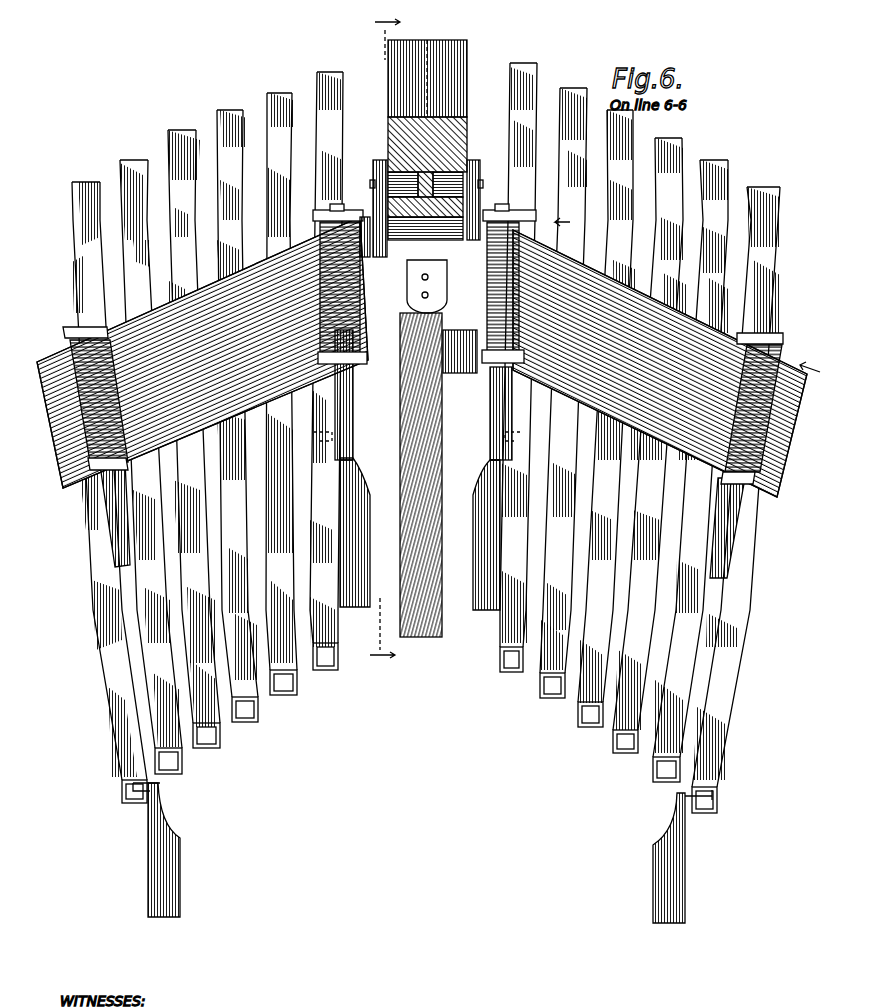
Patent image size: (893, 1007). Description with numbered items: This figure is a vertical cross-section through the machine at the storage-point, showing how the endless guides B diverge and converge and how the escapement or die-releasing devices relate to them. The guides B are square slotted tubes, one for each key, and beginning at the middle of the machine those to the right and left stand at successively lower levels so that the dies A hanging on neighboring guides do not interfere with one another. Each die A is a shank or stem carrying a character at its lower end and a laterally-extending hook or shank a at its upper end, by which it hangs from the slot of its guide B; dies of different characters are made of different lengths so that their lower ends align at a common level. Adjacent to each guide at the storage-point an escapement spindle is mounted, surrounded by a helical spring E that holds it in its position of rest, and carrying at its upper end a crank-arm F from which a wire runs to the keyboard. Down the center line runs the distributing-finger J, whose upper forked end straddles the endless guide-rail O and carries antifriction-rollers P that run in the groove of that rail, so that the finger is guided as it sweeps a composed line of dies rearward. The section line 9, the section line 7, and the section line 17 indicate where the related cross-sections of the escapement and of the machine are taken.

The endless guides B is at (232, 135).
The helical spring E is at (60, 434).
The crank-arm F is at (85, 327).
The endless guide-rail O is at (455, 128).
The antifriction-rollers P is at (398, 178).
The distributing-finger J is at (402, 262).
The dies A is at (355, 552).
The hook or shank a is at (155, 784).
The section line 9 9 is at (314, 436).
The section line 17 17 is at (385, 342).
The section line 7 is at (680, 365).